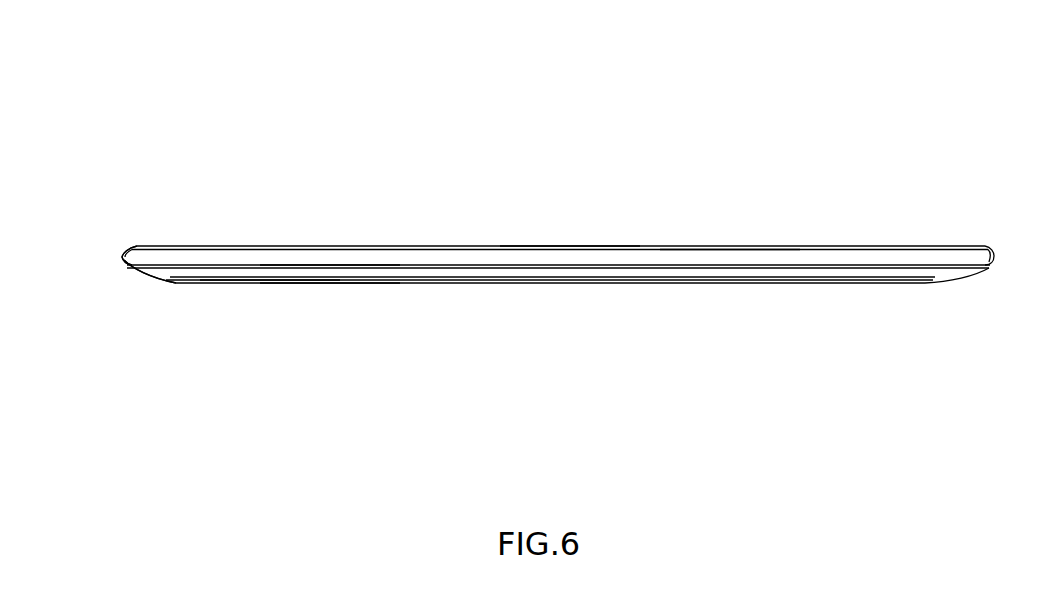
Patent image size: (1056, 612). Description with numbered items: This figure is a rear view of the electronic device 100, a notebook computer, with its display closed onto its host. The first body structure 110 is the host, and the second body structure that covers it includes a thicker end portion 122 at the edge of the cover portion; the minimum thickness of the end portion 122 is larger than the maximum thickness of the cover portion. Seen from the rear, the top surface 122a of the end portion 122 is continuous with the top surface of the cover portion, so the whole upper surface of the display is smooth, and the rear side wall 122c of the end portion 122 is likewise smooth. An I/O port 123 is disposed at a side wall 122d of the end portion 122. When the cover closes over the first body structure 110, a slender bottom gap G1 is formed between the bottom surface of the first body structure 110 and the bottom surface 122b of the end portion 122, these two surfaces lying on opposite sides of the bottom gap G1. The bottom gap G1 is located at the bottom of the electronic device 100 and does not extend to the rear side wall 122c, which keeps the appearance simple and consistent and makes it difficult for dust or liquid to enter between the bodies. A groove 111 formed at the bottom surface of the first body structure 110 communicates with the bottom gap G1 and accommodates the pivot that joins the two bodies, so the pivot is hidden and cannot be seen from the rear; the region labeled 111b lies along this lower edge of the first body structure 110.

The electronic device 100 is at (132, 40).
The first body structure 110 is at (397, 283).
The groove 111 is at (270, 282).
The side edge of first body 111b is at (323, 285).
The end portion 122 is at (438, 246).
The top surface of the end portion 122a is at (563, 245).
The bottom surface of the end portion 122b is at (324, 268).
The rear side wall of the end portion 122c is at (730, 258).
The side wall of the end portion 122d is at (123, 254).
The I/O port 123 is at (125, 258).
The bottom gap G1 is at (173, 279).